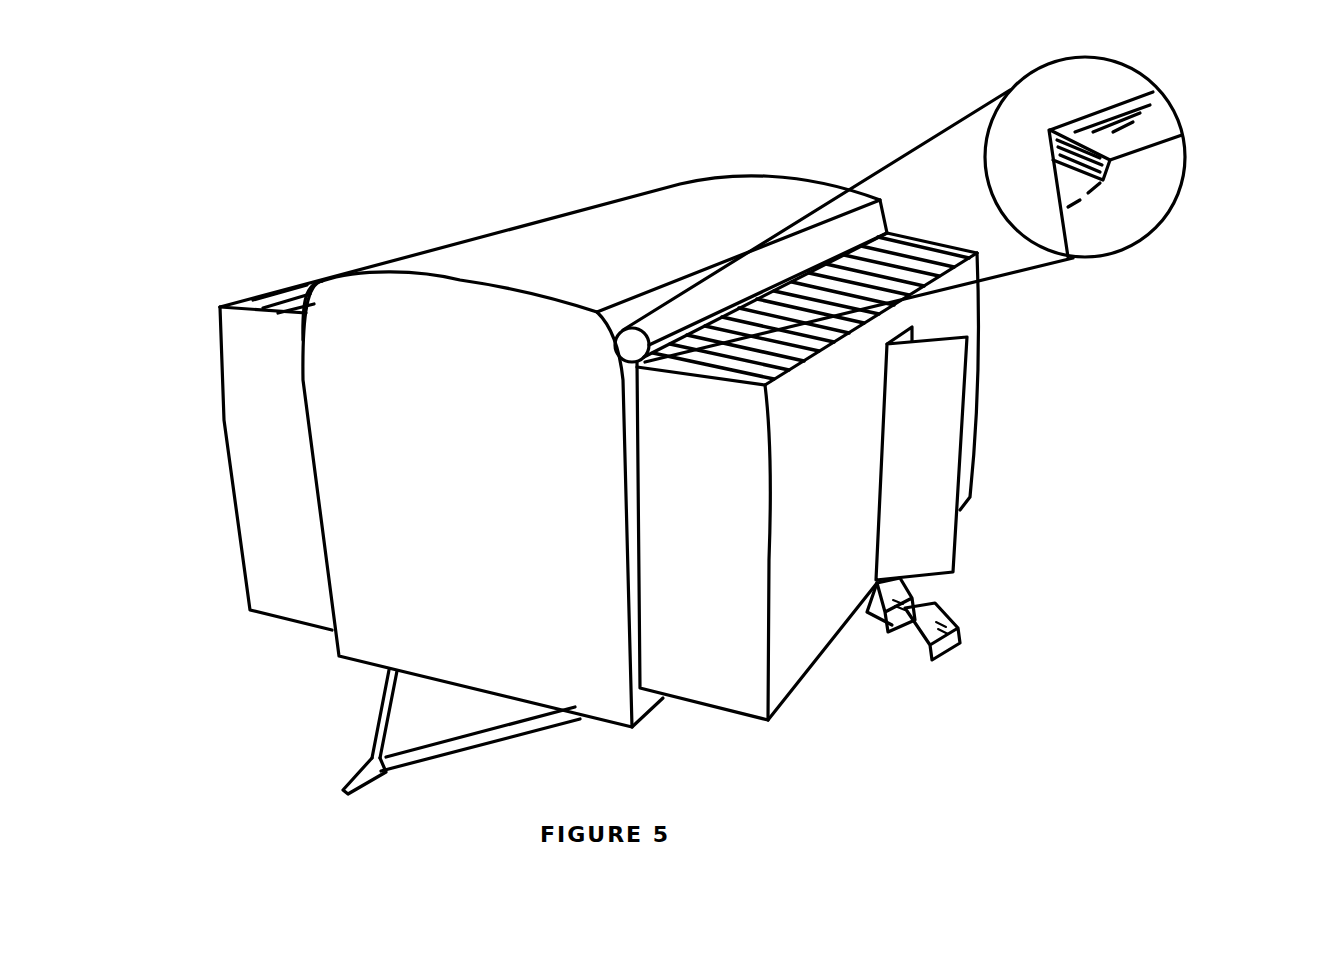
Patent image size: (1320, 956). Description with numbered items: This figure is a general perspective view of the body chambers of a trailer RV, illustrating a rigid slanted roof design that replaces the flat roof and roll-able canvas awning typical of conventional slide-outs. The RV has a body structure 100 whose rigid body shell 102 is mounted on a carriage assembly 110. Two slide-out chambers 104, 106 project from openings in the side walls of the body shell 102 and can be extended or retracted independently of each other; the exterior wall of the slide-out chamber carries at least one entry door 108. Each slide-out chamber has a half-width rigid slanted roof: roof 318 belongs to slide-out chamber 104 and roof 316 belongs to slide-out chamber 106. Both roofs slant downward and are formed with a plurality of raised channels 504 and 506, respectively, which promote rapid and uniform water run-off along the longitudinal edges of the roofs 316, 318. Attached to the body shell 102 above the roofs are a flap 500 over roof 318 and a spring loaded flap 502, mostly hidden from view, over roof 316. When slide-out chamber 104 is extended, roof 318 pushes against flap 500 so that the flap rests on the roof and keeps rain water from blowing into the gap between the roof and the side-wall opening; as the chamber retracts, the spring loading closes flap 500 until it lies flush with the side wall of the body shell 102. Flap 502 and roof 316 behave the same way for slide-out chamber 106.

The body structure 100 is at (763, 160).
The rigid body shell 102 is at (652, 211).
The slide-out chamber 104 is at (745, 510).
The slide-out chamber 106 is at (258, 460).
The entry door 108 is at (933, 524).
The carriage assembly 110 is at (387, 683).
The rigid slanted roof 316 is at (272, 317).
The rigid slanted roof 318 is at (685, 372).
The flap 500 is at (713, 305).
The spring loaded flap 502 is at (317, 314).
The raised channels 504 is at (918, 248).
The raised channels 506 is at (298, 298).